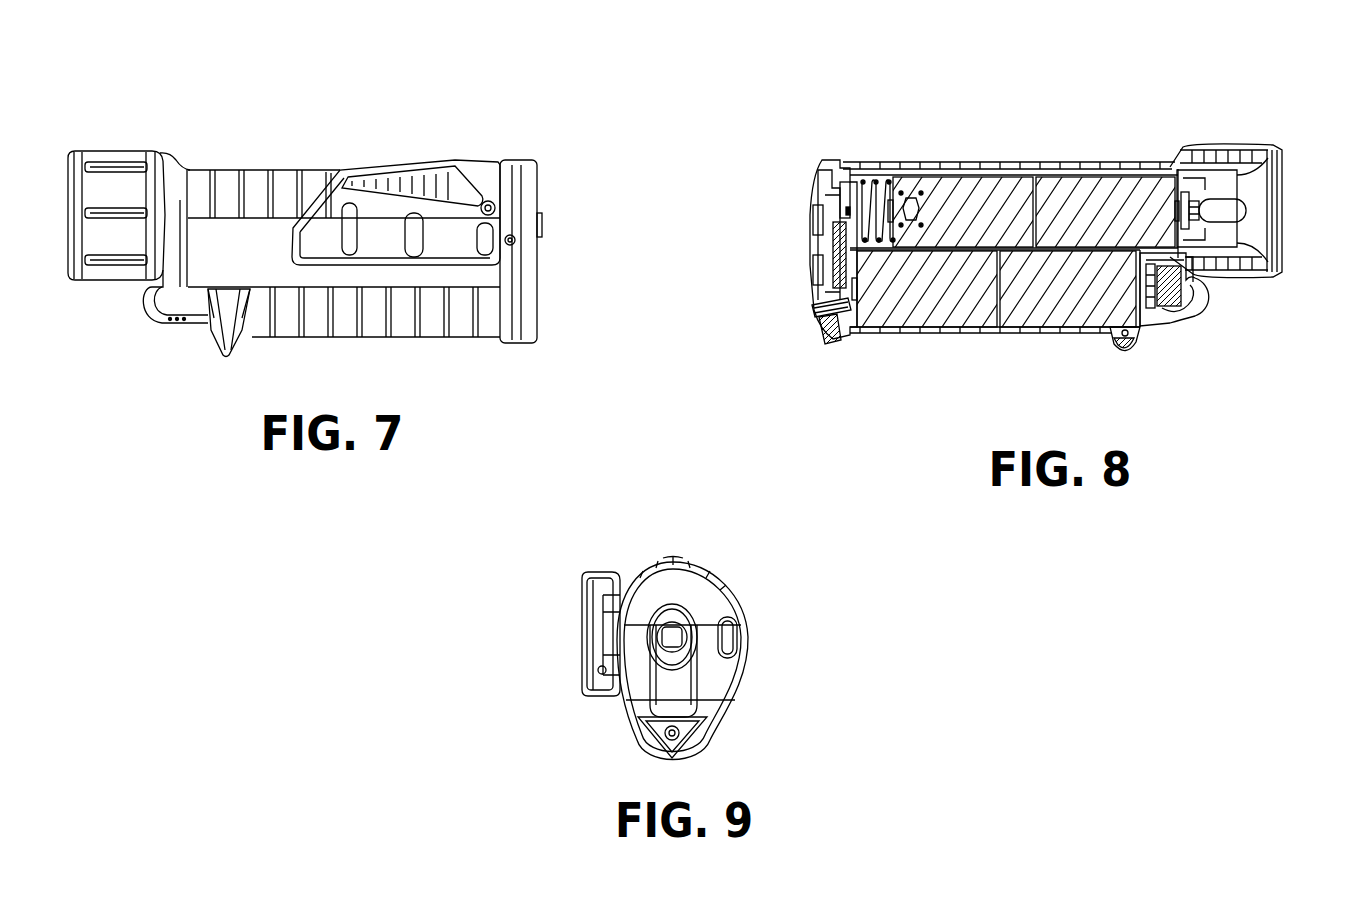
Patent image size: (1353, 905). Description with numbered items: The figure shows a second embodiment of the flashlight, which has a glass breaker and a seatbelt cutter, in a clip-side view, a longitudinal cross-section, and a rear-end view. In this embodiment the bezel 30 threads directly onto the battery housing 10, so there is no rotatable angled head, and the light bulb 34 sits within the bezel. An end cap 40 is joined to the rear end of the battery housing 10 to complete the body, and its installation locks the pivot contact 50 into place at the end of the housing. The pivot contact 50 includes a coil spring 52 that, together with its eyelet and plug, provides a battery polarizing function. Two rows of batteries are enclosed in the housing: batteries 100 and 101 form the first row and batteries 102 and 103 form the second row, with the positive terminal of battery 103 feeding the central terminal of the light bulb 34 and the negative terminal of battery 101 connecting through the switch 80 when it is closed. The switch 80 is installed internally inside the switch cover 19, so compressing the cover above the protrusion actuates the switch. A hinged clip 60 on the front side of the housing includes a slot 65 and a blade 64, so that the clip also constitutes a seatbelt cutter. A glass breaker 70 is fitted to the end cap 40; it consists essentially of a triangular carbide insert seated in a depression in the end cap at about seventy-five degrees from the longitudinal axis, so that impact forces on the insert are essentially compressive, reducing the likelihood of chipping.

In FIG. 7, the battery housing 10 is at (285, 168).
In FIG. 8, the battery housing 10 is at (1040, 170).
In FIG. 8, the switch cover 19 is at (1130, 350).
In FIG. 7, the bezel 30 is at (113, 150).
In FIG. 8, the bezel 30 is at (1222, 142).
In FIG. 8, the light bulb 34 is at (1246, 209).
In FIG. 8, the end cap 40 is at (815, 180).
In FIG. 9, the end cap 40 is at (657, 588).
In FIG. 8, the pivot contact 50 is at (832, 272).
In FIG. 8, the coil spring 52 is at (870, 178).
In FIG. 7, the clip 60 is at (455, 240).
In FIG. 7, the blade 64 is at (470, 192).
In FIG. 7, the slot 65 is at (418, 192).
In FIG. 8, the glass breaker 70 is at (818, 350).
In FIG. 9, the glass breaker 70 is at (700, 727).
In FIG. 8, the switch 80 is at (1200, 312).
In FIG. 8, the battery 100 is at (935, 310).
In FIG. 8, the battery 101 is at (1067, 310).
In FIG. 8, the battery 102 is at (960, 185).
In FIG. 8, the battery 103 is at (1100, 188).